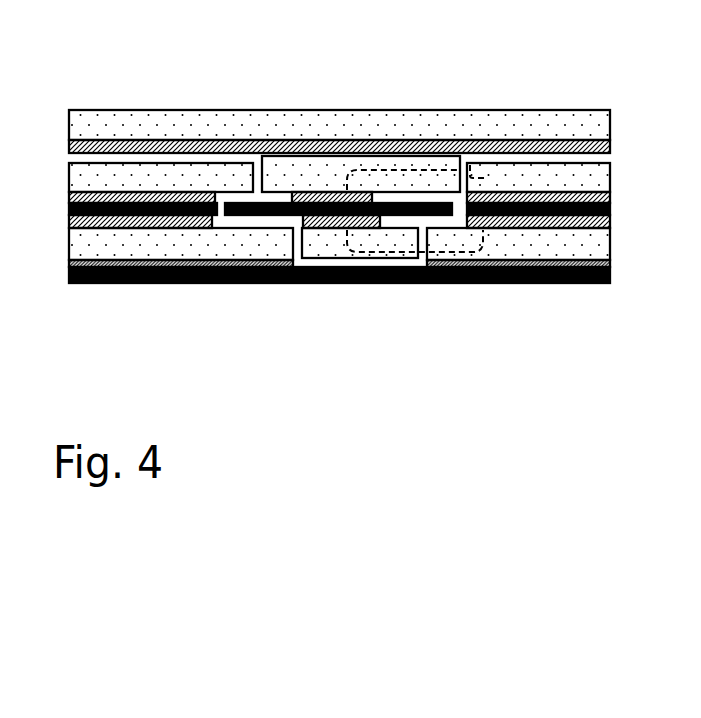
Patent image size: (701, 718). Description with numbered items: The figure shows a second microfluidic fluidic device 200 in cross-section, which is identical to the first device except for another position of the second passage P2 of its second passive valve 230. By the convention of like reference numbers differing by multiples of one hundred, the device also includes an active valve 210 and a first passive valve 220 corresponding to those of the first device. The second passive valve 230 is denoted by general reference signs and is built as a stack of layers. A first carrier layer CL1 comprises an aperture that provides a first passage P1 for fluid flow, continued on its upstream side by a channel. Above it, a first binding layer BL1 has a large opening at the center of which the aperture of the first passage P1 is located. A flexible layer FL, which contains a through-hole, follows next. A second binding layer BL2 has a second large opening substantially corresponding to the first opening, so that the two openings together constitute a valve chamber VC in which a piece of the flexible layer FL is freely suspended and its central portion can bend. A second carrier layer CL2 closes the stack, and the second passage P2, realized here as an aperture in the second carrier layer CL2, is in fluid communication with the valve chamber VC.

The fluidic device 200 is at (122, 82).
The active valve 210 is at (251, 301).
The first passive valve 220 is at (235, 171).
The second passive valve 230 is at (476, 172).
The second carrier layer CL2 is at (370, 178).
The valve chamber VC is at (418, 197).
The second passage P2 is at (474, 172).
The second binding layer BL2 is at (488, 186).
The flexible layer FL is at (397, 218).
The first carrier layer CL1 is at (402, 216).
The first passage P1 is at (422, 243).
The first binding layer BL1 is at (490, 283).